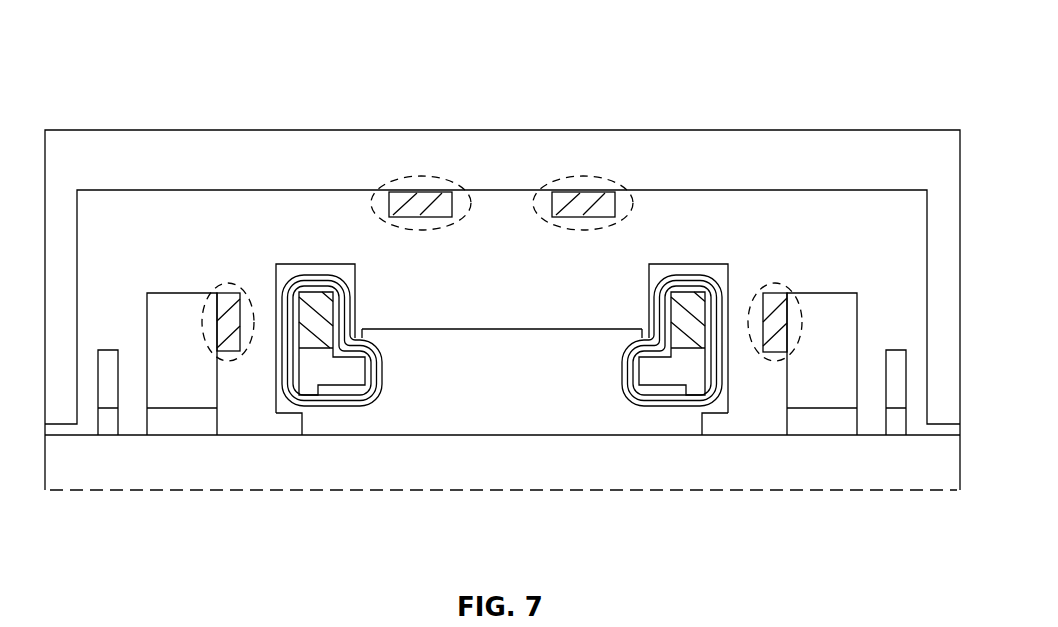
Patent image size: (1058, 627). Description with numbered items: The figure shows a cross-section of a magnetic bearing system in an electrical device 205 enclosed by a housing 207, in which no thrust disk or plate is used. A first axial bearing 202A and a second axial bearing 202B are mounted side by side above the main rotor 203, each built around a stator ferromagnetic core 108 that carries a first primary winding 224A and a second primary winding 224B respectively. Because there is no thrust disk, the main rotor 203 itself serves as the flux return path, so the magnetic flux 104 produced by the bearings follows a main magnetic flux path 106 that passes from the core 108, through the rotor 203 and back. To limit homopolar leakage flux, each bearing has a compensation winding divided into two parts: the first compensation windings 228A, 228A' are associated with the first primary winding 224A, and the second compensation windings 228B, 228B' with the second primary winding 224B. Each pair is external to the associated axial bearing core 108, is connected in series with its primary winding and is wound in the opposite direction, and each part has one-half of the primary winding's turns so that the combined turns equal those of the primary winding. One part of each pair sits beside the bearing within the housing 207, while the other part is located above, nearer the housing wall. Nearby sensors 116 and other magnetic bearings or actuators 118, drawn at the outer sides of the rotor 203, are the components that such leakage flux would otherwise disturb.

The magnetic flux 104 is at (303, 275).
The main magnetic flux path 106 is at (287, 382).
The stator ferromagnetic core 108 is at (318, 412).
The sensors 116 is at (108, 378).
The other magnetic bearings or actuators 118 is at (182, 395).
The first axial bearing 202A is at (344, 264).
The second axial bearing 202B is at (661, 264).
The main rotor 203 is at (502, 450).
The electrical device 205 is at (503, 210).
The housing 207 is at (462, 130).
The first primary winding 224A is at (317, 320).
The second primary winding 224B is at (686, 320).
The first compensation winding 228A is at (201, 213).
The second compensation winding 228B is at (812, 213).
The first compensation winding 228A' is at (421, 148).
The second compensation winding 228B' is at (596, 148).